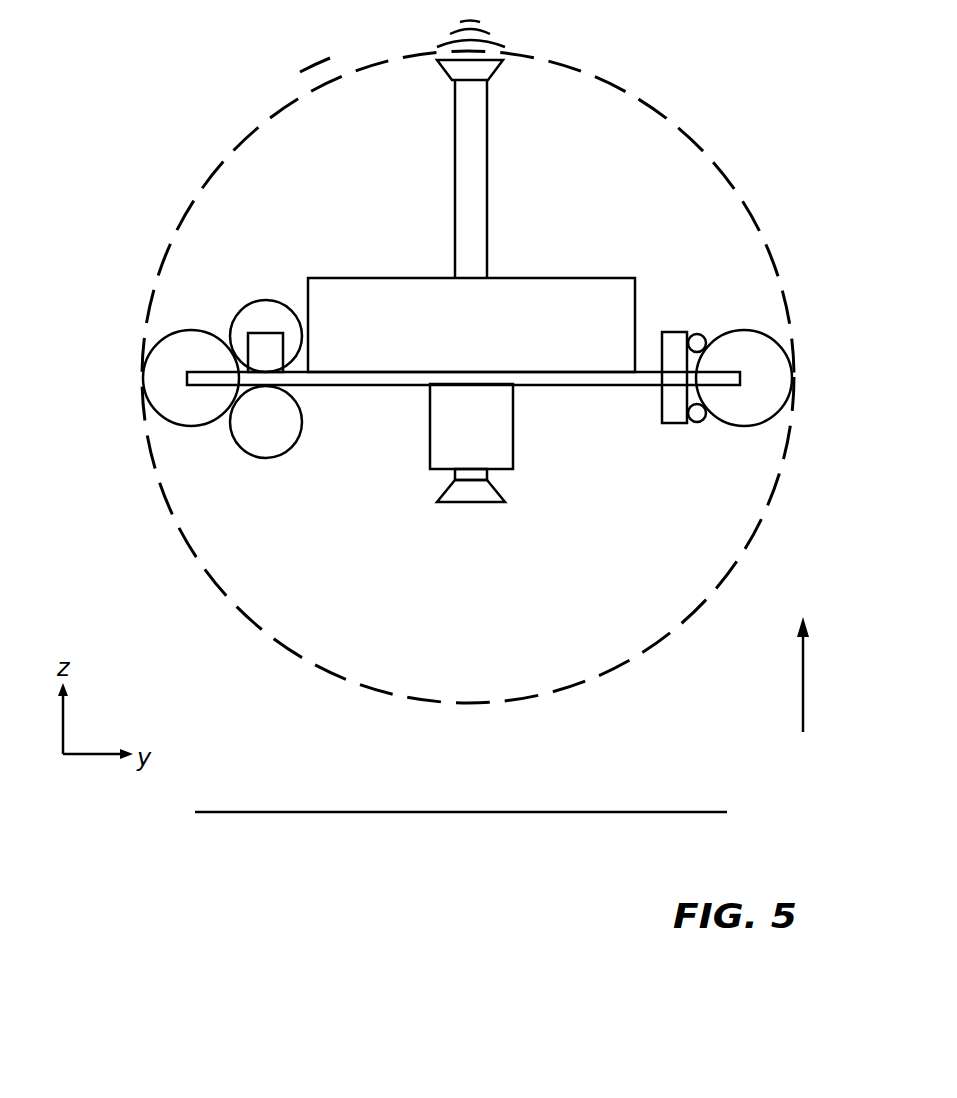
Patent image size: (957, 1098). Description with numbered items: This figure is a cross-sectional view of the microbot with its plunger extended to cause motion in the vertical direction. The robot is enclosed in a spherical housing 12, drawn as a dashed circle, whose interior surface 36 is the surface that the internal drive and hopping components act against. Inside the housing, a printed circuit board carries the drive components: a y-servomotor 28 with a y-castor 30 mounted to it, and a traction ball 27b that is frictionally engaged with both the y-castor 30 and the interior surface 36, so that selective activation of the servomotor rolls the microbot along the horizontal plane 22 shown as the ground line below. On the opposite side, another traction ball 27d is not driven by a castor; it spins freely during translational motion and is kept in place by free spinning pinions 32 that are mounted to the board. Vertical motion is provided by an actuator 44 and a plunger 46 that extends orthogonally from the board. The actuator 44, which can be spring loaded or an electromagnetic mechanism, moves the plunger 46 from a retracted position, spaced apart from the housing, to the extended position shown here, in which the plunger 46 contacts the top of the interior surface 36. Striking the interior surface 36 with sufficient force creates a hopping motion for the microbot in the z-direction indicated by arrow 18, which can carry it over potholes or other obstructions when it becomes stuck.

The spherical housing 12 is at (222, 144).
The interior surface 36 is at (352, 80).
The plunger 46 is at (475, 207).
The y-castor 30 is at (266, 310).
The y-servomotor 28 is at (273, 360).
The traction ball 27b is at (180, 410).
The traction ball 27d is at (768, 362).
The free spinning pinion 32 is at (696, 342).
The actuator 44 is at (502, 453).
The horizontal plane 22 is at (258, 810).
The arrow 18 is at (805, 674).